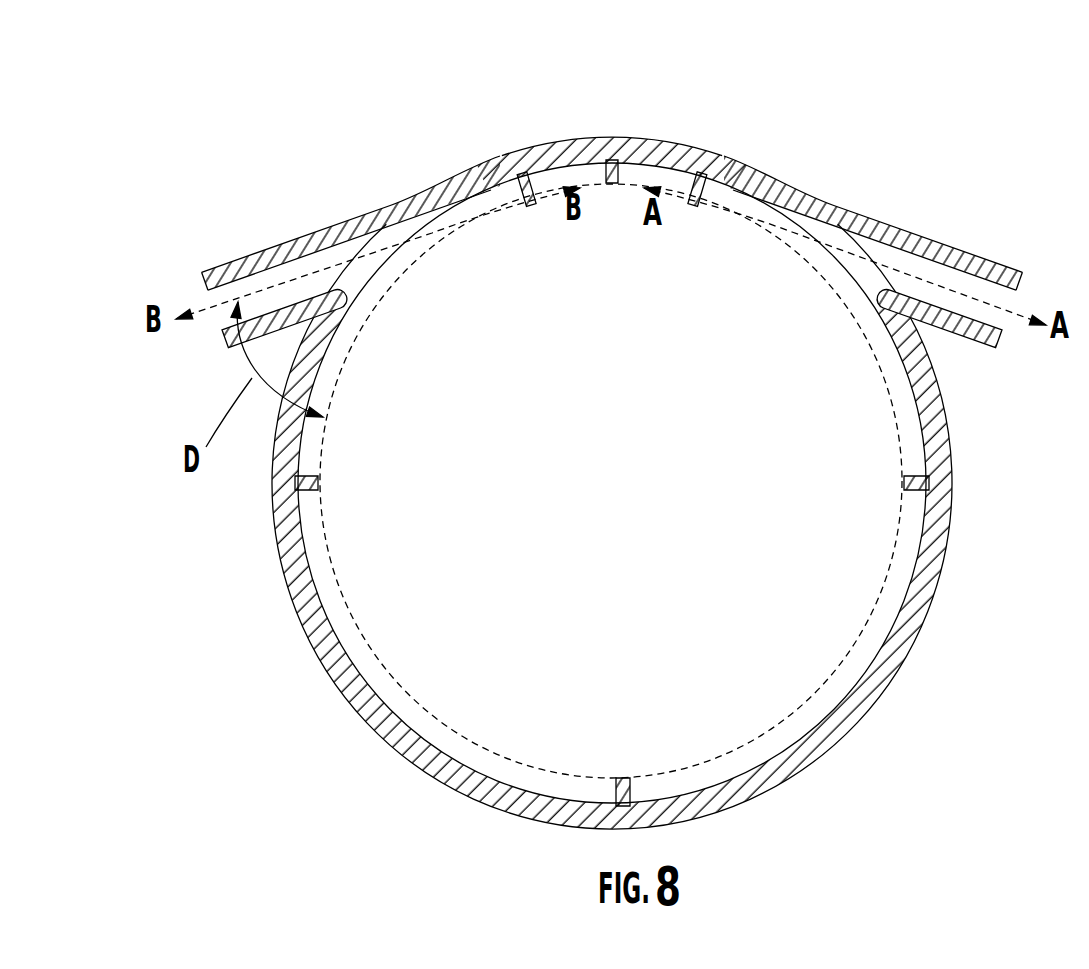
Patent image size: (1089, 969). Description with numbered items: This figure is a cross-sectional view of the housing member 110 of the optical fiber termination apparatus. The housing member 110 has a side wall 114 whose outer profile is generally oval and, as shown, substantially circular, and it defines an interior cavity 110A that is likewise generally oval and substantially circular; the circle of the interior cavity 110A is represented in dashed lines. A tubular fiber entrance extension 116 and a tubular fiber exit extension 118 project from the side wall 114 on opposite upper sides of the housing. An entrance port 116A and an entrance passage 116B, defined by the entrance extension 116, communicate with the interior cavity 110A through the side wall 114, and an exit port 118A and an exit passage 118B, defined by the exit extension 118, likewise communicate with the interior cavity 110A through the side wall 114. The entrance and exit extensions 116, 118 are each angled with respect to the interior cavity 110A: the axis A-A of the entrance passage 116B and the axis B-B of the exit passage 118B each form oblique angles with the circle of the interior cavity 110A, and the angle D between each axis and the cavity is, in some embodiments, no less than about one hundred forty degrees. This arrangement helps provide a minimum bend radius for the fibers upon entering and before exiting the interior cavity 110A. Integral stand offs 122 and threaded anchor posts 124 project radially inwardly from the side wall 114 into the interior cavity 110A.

The housing member 110 is at (897, 715).
The interior cavity 110A is at (640, 513).
The side wall 114 is at (936, 562).
The tubular fiber entrance extension 116 is at (920, 244).
The entrance port 116A is at (838, 260).
The entrance passage 116B is at (932, 273).
The tubular fiber exit extension 118 is at (262, 256).
The exit port 118A is at (378, 262).
The exit passage 118B is at (288, 270).
The integral stand offs 122 is at (596, 168).
The threaded anchor posts 124 is at (530, 172).